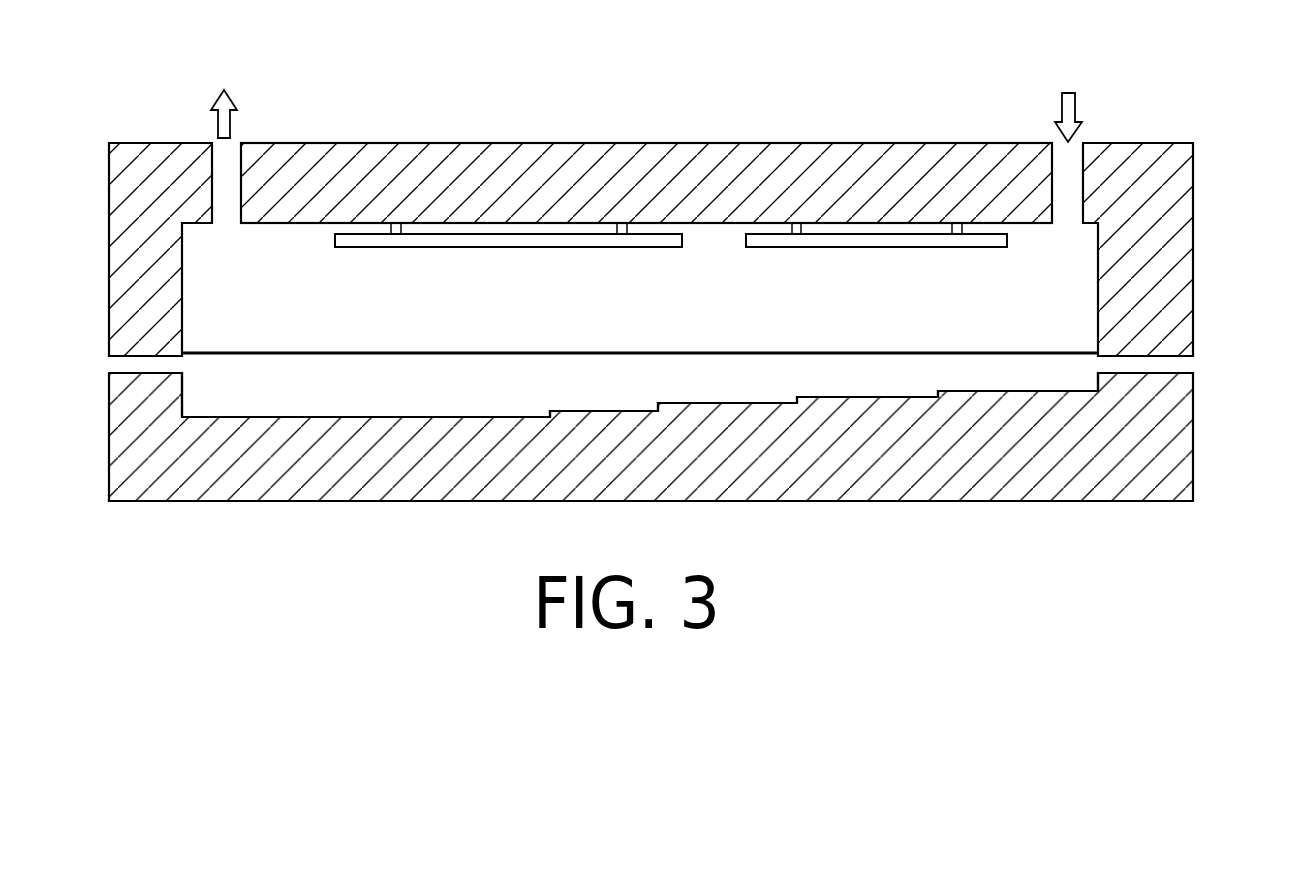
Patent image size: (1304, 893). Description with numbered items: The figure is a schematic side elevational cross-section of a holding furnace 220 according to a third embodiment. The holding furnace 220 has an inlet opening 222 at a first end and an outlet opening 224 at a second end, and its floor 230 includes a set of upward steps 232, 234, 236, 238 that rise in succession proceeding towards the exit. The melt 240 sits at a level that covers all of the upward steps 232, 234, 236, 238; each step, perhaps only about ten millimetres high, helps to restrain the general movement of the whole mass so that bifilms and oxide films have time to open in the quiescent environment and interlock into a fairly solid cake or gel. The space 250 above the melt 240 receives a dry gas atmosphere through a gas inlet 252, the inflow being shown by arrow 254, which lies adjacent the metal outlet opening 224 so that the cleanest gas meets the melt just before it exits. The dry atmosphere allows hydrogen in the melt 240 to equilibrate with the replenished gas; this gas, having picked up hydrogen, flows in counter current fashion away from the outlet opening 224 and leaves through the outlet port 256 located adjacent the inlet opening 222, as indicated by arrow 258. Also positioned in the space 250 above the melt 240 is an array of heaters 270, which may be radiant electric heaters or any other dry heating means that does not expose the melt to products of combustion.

The holding furnace 220 is at (630, 108).
The inlet opening 222 is at (117, 370).
The outlet opening 224 is at (1182, 370).
The floor 230 is at (653, 443).
The upward step 232 is at (548, 414).
The upward step 234 is at (657, 408).
The upward step 236 is at (795, 400).
The upward step 238 is at (936, 392).
The melt 240 is at (323, 352).
The space above the melt 250 is at (600, 249).
The gas inlet 252 is at (1083, 212).
The arrow 254 is at (1072, 98).
The outlet port 256 is at (212, 203).
The arrow 258 is at (230, 98).
The heaters 270 is at (507, 247).